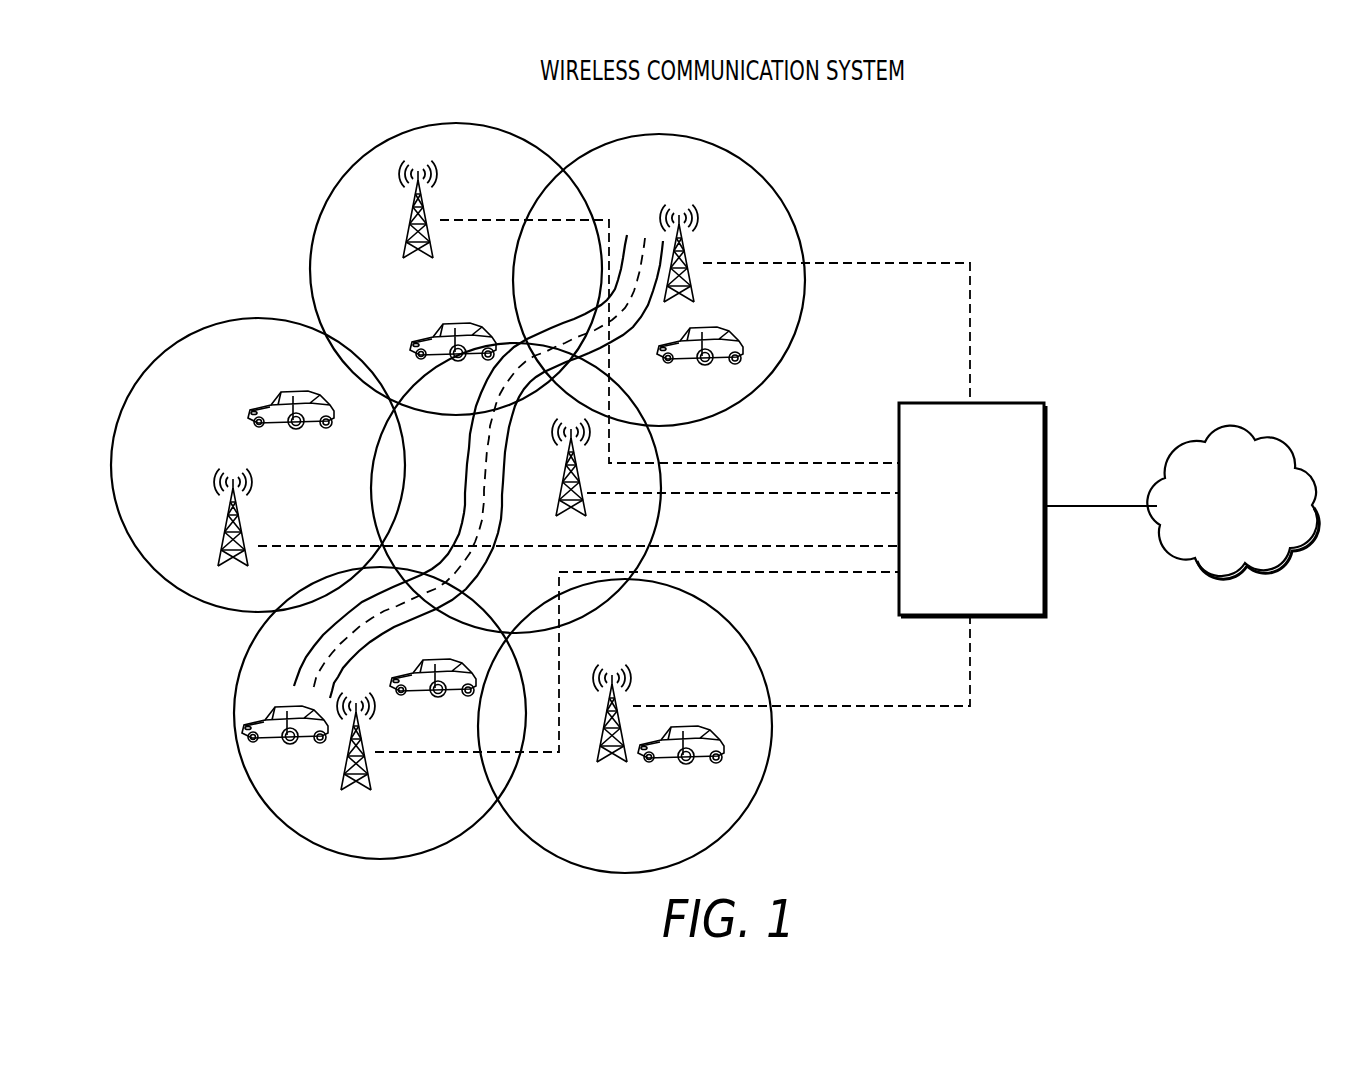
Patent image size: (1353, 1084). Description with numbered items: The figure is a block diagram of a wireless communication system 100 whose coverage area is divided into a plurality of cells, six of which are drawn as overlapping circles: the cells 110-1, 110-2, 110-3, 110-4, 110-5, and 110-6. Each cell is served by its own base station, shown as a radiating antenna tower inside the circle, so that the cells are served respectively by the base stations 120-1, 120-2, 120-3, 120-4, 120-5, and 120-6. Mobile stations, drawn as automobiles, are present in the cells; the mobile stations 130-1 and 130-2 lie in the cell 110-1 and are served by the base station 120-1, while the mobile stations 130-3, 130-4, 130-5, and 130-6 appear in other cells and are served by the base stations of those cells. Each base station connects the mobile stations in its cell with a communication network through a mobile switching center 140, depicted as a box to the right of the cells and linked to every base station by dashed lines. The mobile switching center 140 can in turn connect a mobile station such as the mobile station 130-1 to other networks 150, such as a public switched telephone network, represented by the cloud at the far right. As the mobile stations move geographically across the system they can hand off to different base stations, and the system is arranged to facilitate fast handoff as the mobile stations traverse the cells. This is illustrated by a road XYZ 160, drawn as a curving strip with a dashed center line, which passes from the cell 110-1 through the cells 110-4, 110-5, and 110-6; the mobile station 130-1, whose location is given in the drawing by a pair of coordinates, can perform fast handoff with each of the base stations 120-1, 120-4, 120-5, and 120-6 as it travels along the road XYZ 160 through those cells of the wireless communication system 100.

The wireless communication system 100 is at (1052, 202).
The cell 110-1 is at (243, 667).
The cell 110-2 is at (233, 321).
The cell 110-3 is at (746, 640).
The cell 110-4 is at (662, 511).
The cell 110-5 is at (387, 142).
The cell 110-6 is at (656, 134).
The base station 120-1 is at (370, 773).
The base station 120-2 is at (245, 519).
The base station 120-3 is at (601, 748).
The base station 120-4 is at (559, 498).
The base station 120-5 is at (410, 247).
The base station 120-6 is at (686, 240).
The mobile station 130-1 is at (290, 742).
The mobile station 130-2 is at (432, 696).
The mobile station 130-3 is at (680, 762).
The mobile station 130-4 is at (688, 361).
The mobile station 130-5 is at (463, 322).
The mobile station 130-6 is at (290, 390).
The mobile switching center 140 is at (1022, 403).
The other networks 150 is at (1228, 436).
The road XYZ 160 is at (438, 481).